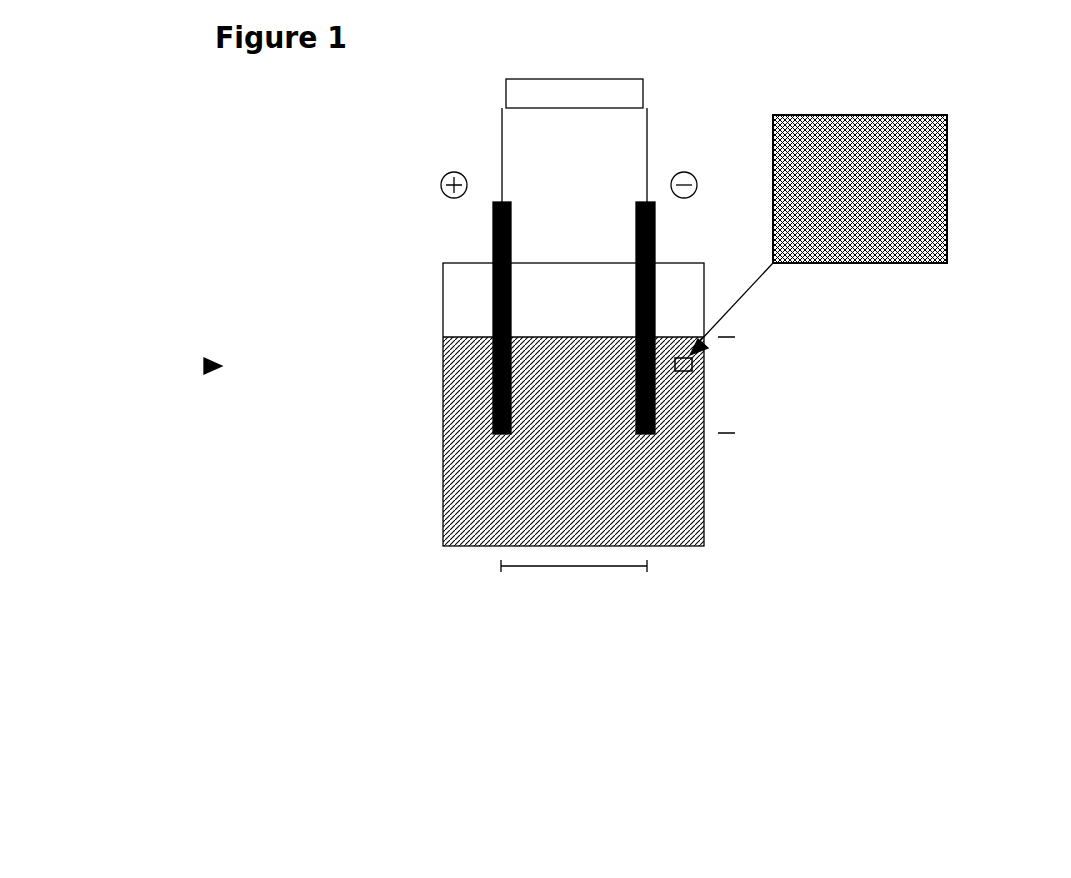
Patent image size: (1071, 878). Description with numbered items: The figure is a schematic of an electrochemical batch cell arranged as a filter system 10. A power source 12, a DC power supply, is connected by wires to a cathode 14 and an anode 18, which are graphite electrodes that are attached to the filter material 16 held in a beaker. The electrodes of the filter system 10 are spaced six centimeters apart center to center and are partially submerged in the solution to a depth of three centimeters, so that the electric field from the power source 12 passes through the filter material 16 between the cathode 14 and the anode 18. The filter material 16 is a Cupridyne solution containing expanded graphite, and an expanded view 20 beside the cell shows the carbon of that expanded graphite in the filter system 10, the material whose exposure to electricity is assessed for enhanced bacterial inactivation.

The filter system 10 is at (212, 366).
The power source 12 is at (505, 93).
The cathode 14 is at (493, 236).
The filter material 16 is at (533, 546).
The anode 18 is at (655, 231).
The expanded view 20 is at (890, 263).